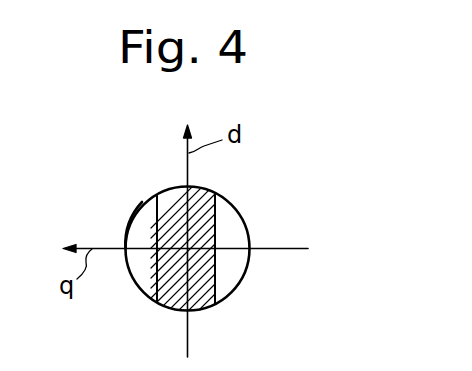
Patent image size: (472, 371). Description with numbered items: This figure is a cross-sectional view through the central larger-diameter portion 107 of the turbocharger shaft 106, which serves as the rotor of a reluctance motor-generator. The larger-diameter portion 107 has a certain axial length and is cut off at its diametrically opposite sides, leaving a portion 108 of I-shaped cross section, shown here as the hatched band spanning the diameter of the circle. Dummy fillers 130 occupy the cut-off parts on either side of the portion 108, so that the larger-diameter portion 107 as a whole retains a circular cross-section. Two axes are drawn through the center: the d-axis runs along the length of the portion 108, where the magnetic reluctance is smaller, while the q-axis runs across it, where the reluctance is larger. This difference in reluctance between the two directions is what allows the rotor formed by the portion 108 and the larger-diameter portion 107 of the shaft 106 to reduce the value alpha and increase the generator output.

The shaft 106 is at (240, 201).
The larger-diameter portion 107 is at (142, 202).
The portion of I-shaped cross section 108 is at (162, 253).
The dummy fillers 130 is at (219, 294).